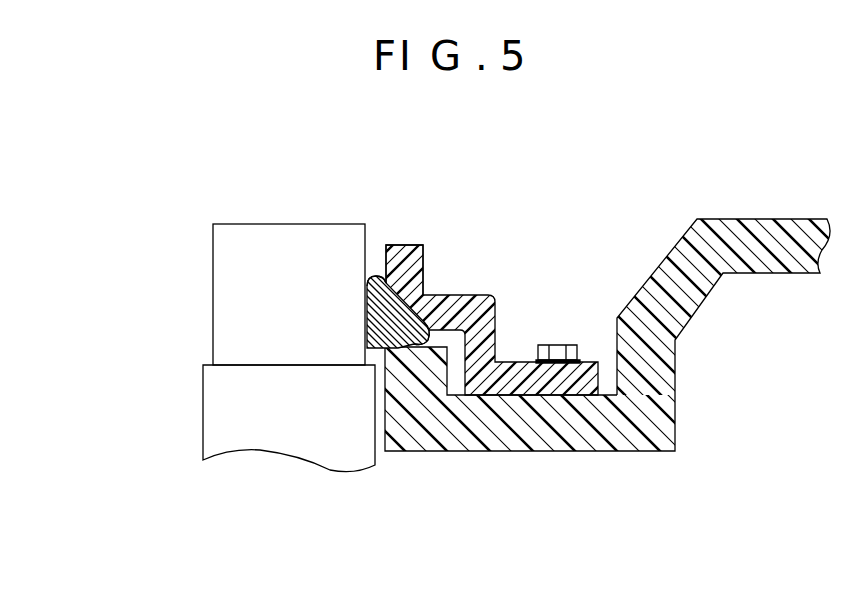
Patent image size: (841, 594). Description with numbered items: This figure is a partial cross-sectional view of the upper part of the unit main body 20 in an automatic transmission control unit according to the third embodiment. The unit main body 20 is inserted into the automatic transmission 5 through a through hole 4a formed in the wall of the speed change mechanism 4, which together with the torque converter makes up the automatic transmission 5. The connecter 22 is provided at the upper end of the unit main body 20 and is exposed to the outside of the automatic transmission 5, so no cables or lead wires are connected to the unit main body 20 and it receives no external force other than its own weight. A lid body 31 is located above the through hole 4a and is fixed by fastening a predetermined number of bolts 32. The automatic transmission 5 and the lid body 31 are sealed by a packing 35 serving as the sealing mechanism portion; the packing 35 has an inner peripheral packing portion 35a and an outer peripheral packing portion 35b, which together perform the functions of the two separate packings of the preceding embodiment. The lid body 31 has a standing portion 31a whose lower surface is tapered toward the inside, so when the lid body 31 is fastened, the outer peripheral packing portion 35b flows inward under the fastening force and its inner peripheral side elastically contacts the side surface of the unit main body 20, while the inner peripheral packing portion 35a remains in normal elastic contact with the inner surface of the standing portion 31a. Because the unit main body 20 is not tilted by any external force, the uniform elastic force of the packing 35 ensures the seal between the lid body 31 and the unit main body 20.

The speed change mechanism 4 is at (743, 218).
The through hole 4a is at (385, 415).
The automatic transmission 5 is at (430, 255).
The unit main body 20 is at (200, 433).
The connecter 22 is at (233, 244).
The lid body 31 is at (503, 281).
The standing portion 31a is at (397, 247).
The bolt 32 is at (557, 350).
The packing 35 is at (290, 346).
The inner peripheral packing portion 35a is at (376, 287).
The outer peripheral packing portion 35b is at (385, 349).